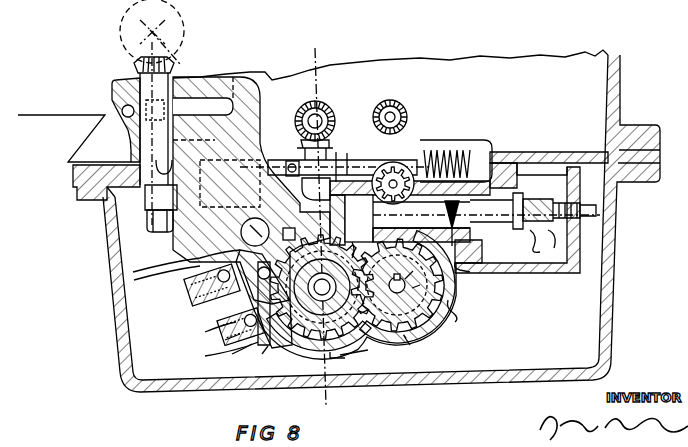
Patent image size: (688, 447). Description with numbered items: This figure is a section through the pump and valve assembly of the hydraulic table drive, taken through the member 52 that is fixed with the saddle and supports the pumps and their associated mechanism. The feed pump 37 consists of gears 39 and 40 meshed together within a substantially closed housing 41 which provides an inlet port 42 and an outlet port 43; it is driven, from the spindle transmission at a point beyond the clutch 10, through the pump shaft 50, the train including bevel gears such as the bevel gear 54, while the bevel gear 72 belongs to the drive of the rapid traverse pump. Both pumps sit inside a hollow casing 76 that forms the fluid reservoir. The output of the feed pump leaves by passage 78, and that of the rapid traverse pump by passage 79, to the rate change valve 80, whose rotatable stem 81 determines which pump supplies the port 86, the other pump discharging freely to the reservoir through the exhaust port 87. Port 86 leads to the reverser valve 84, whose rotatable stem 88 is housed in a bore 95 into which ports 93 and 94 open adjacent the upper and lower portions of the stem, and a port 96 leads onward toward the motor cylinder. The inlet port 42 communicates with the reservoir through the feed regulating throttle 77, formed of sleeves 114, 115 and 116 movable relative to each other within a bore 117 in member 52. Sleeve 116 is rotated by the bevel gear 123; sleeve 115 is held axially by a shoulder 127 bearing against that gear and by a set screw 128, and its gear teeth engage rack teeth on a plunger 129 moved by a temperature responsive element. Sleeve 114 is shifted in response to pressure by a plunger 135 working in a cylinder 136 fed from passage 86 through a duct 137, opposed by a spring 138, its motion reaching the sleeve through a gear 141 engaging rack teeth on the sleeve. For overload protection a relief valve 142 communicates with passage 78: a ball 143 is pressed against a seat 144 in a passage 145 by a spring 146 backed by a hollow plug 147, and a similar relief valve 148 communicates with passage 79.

The clutch 10 is at (327, 222).
The feed pump 37 is at (411, 346).
The pump gear 39 is at (290, 356).
The pump gear 40 is at (412, 335).
The pump housing 41 is at (448, 322).
The inlet port 42 is at (351, 226).
The outlet port 43 is at (362, 358).
The pump shaft 50 is at (409, 283).
The member 52 is at (74, 176).
The bevel gear 54 is at (390, 100).
The bevel gear 72 is at (304, 118).
The housing or casing 76 is at (607, 292).
The feed regulating throttle 77 is at (460, 272).
The passage 78 is at (341, 363).
The passage 79 is at (219, 299).
The rate change valve 80 is at (114, 277).
The valve stem 81 is at (259, 221).
The reverser valve 84 is at (112, 200).
The port 86 is at (190, 215).
The exhaust port 87 is at (291, 222).
The valve stem 88 is at (130, 144).
The port 93 is at (148, 103).
The port 94 is at (147, 135).
The bore 95 is at (112, 100).
The port 96 is at (186, 104).
The sleeve 114 is at (403, 287).
The sleeve 115 is at (476, 272).
The sleeve 116 is at (498, 152).
The bore 117 is at (510, 170).
The bevel gear 123 is at (510, 186).
The shoulder 127 is at (486, 233).
The set screw 128 is at (618, 232).
The plunger 129 is at (542, 247).
The plunger 135 is at (368, 160).
The cylinder 136 is at (346, 160).
The duct 137 is at (268, 160).
The spring 138 is at (455, 148).
The gear 141 is at (403, 162).
The relief valve 142 is at (225, 340).
The ball 143 is at (205, 332).
The seat 144 is at (222, 312).
The passage 145 is at (248, 357).
The spring 146 is at (225, 359).
The hollow plug 147 is at (199, 358).
The relief valve 148 is at (190, 284).